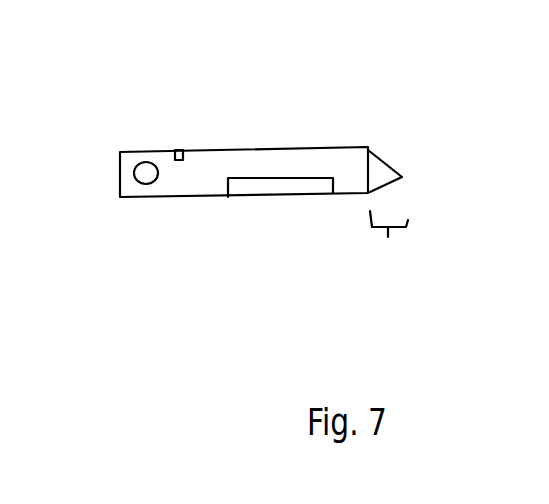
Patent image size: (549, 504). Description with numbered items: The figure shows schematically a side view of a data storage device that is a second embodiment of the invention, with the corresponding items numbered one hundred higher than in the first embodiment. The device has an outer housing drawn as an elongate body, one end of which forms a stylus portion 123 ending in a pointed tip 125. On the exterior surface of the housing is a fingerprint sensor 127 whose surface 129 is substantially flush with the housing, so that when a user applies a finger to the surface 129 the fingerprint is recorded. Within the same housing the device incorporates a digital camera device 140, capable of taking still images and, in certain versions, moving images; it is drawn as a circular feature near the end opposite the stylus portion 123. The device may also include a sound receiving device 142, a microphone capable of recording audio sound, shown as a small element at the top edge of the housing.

The stylus portion 123 is at (394, 244).
The tip 125 is at (380, 170).
The fingerprint sensor 127 is at (270, 232).
The surface 129 is at (300, 195).
The digital camera device 140 is at (142, 197).
The sound receiving device 142 is at (178, 147).